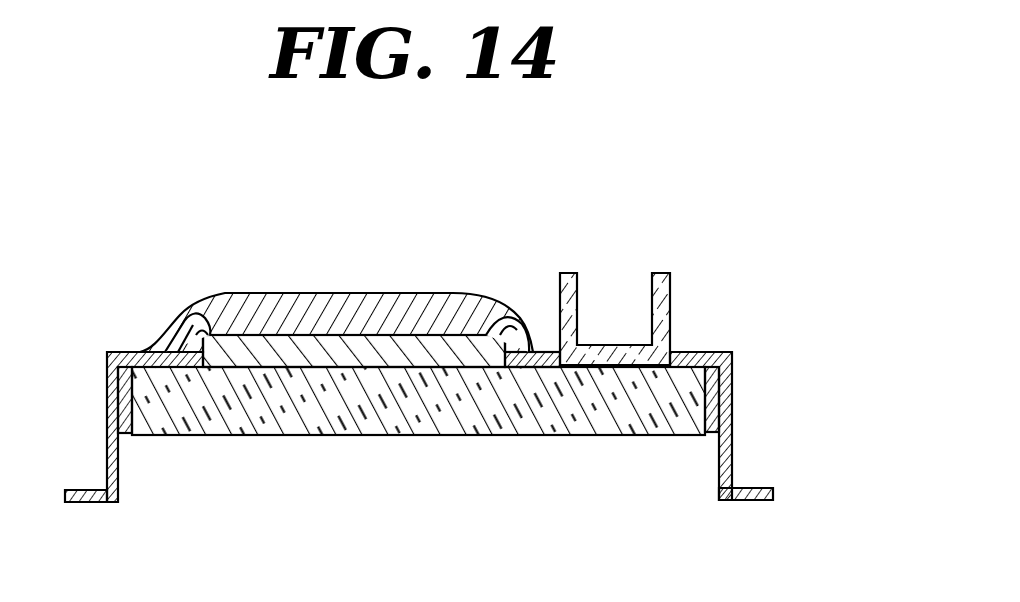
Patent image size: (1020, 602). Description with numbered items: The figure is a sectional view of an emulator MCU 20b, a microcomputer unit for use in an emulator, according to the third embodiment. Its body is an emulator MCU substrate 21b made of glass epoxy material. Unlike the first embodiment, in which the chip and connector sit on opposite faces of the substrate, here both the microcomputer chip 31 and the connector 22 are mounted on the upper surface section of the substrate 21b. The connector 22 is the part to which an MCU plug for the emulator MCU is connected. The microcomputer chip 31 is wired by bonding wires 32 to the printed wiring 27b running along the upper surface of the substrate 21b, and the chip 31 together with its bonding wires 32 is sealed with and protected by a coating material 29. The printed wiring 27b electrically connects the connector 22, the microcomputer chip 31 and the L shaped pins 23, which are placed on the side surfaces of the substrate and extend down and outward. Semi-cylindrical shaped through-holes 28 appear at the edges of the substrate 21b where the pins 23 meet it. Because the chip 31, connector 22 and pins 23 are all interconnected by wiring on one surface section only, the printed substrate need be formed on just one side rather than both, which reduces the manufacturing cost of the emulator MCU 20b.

The emulator MCU 20b is at (637, 242).
The emulator MCU substrate 21b is at (582, 437).
The connector 22 is at (672, 288).
The L shaped pins 23 is at (97, 503).
The printed wiring 27b is at (126, 351).
The semi-cylindrical shaped through-holes 28 is at (127, 437).
The coating material 29 is at (292, 293).
The microcomputer chip 31 is at (400, 340).
The bonding wires 32 is at (188, 316).